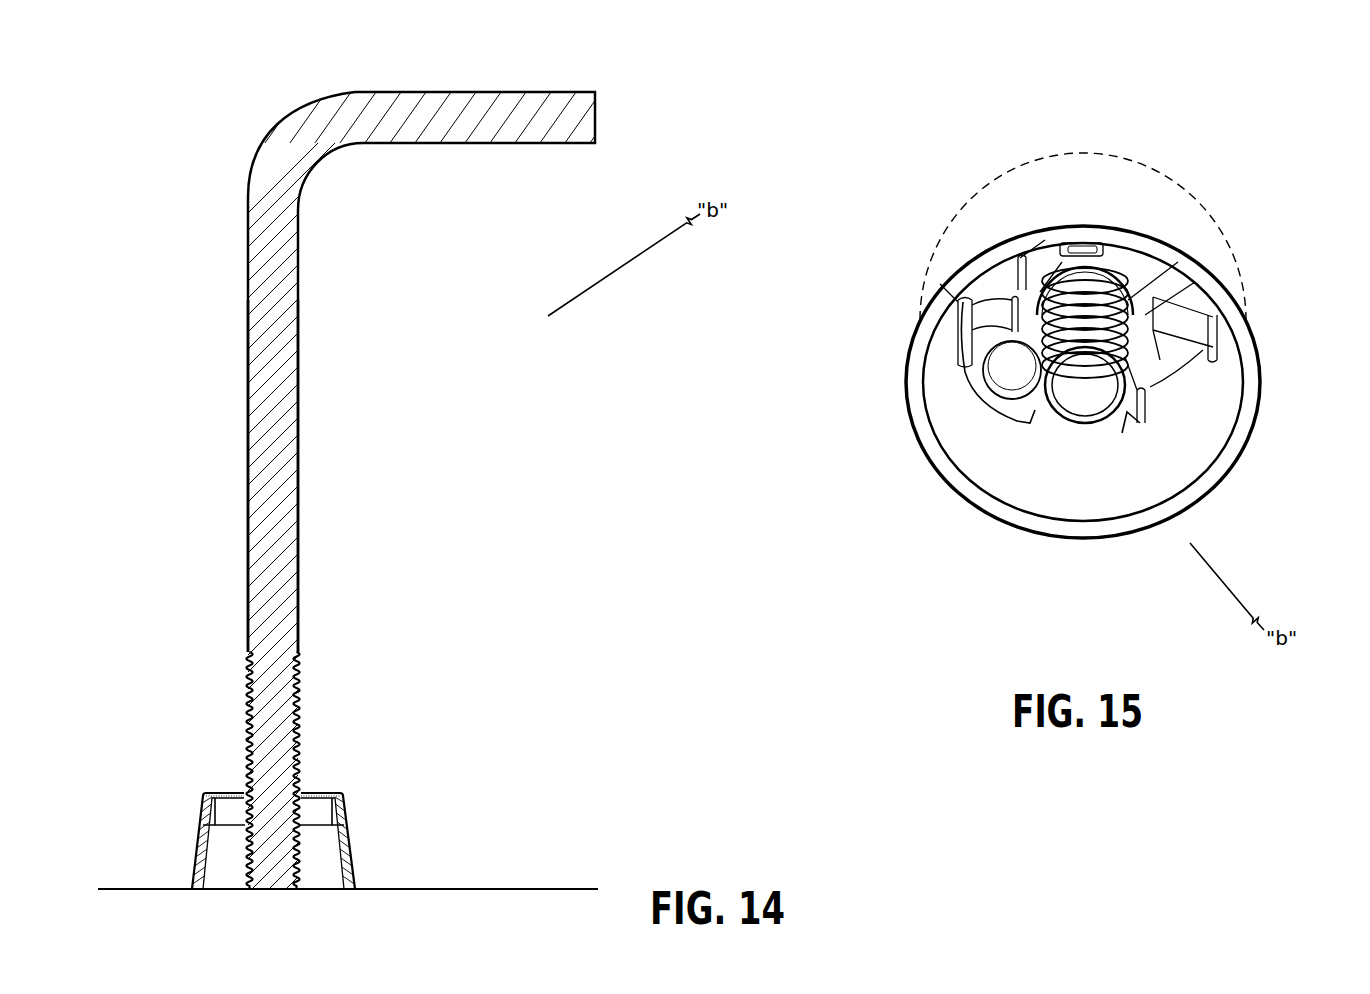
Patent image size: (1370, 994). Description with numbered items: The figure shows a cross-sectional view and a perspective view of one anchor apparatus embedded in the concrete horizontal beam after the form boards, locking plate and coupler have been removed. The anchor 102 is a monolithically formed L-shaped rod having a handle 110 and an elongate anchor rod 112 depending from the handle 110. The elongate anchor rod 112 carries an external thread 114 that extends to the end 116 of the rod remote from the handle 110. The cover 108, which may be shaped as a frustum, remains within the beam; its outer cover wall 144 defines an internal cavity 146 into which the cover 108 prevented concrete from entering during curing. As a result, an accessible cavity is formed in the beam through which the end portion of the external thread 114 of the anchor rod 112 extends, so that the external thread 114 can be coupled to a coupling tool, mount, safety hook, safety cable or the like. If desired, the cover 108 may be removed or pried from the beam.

In FIG. 14, the anchor 102 is at (245, 197).
In FIG. 14, the handle 110 is at (575, 113).
In FIG. 14, the elongate anchor rod 112 is at (268, 592).
In FIG. 14, the external thread 114 is at (299, 660).
In FIG. 15, the external thread 114 is at (1090, 322).
In FIG. 14, the cover 108 is at (345, 835).
In FIG. 15, the cover 108 is at (1127, 167).
In FIG. 14, the outer cover wall 144 is at (197, 848).
In FIG. 15, the internal cavity 146 is at (1180, 428).
In FIG. 15, the end 116 is at (1083, 393).